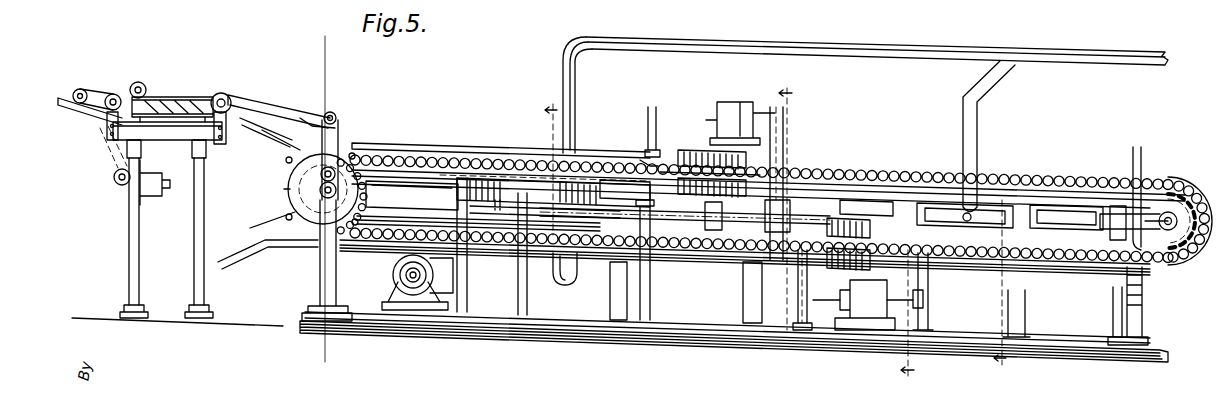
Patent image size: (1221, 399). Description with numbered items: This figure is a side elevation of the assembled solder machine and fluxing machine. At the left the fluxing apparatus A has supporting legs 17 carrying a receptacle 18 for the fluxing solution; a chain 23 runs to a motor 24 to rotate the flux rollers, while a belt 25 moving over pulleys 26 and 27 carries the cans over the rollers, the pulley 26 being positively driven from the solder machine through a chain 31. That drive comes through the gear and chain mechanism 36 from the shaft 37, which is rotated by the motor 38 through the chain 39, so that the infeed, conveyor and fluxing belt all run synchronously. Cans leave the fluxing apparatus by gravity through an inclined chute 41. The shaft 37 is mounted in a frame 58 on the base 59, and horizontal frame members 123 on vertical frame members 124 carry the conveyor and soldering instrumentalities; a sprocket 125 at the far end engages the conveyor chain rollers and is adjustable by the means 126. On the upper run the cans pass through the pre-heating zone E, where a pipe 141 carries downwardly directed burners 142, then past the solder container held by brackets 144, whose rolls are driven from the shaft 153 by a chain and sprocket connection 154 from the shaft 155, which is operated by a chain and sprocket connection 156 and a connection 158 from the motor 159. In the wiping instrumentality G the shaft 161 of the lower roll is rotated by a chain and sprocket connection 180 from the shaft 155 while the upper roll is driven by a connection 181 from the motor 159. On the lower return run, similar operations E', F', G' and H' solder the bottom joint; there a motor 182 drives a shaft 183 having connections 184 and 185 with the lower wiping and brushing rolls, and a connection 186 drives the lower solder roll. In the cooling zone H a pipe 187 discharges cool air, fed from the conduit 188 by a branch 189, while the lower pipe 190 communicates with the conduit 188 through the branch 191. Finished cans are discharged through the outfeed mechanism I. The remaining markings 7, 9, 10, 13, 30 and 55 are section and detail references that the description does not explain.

The section line 7- 7 is at (325, 197).
The section line 9- 9 is at (775, 236).
The section line 10- 10 is at (848, 235).
The bracket 13 is at (330, 116).
The supporting legs 17 is at (197, 247).
The receptacle 18 is at (178, 133).
The chain 23 is at (113, 156).
The motor 24 is at (140, 181).
The belt 25 is at (213, 92).
The pulley 26 is at (227, 97).
The pulley 27 is at (114, 92).
The feed belt 30 is at (176, 102).
The chain 31 is at (276, 110).
The gear and chain mechanism 36 is at (338, 150).
The shaft 37 is at (316, 190).
The motor 38 is at (426, 293).
The chain 39 is at (403, 249).
The inclined chute 41 is at (268, 157).
The pulley 55 is at (341, 120).
The frame 58 is at (320, 258).
The base 59 is at (568, 333).
The horizontal frame members 123 is at (428, 181).
The vertical frame members 124 is at (612, 288).
The sprocket 125 is at (1166, 198).
The adjusting means 126 is at (1118, 207).
The pipe 141 is at (520, 152).
The burners 142 is at (461, 148).
The brackets 144 is at (503, 203).
The shaft 153 is at (650, 165).
The chain and sprocket connection 154 is at (620, 252).
The shaft 155 is at (690, 243).
The chain and sprocket connection 156 is at (694, 316).
The chain and sprocket connection 158 is at (784, 142).
The motor 159 is at (735, 105).
The shaft 161 is at (652, 165).
The chain and sprocket connection 180 is at (745, 249).
The chain and sprocket connection 181 is at (784, 118).
The motor 182 is at (887, 306).
The shaft 183 is at (840, 326).
The sprocket and chain connection 184 is at (795, 321).
The sprocket and chain connection 185 is at (796, 260).
The chain and sprocket connection 186 is at (929, 297).
The pipe 187 is at (1062, 193).
The conduit 188 is at (997, 55).
The branch 189 is at (975, 118).
The pipe 190 is at (536, 252).
The branch 191 is at (578, 85).
The fluxing apparatus A is at (112, 91).
The pre-heating zone E is at (768, 158).
The preheating zone E' is at (1184, 230).
The soldering instrumentality F' is at (868, 236).
The wiping instrumentality G is at (710, 159).
The wiping instrumentality G' is at (858, 256).
The cooling zone H is at (935, 189).
The cooling zone H' is at (501, 246).
The outfeed mechanism I is at (268, 254).